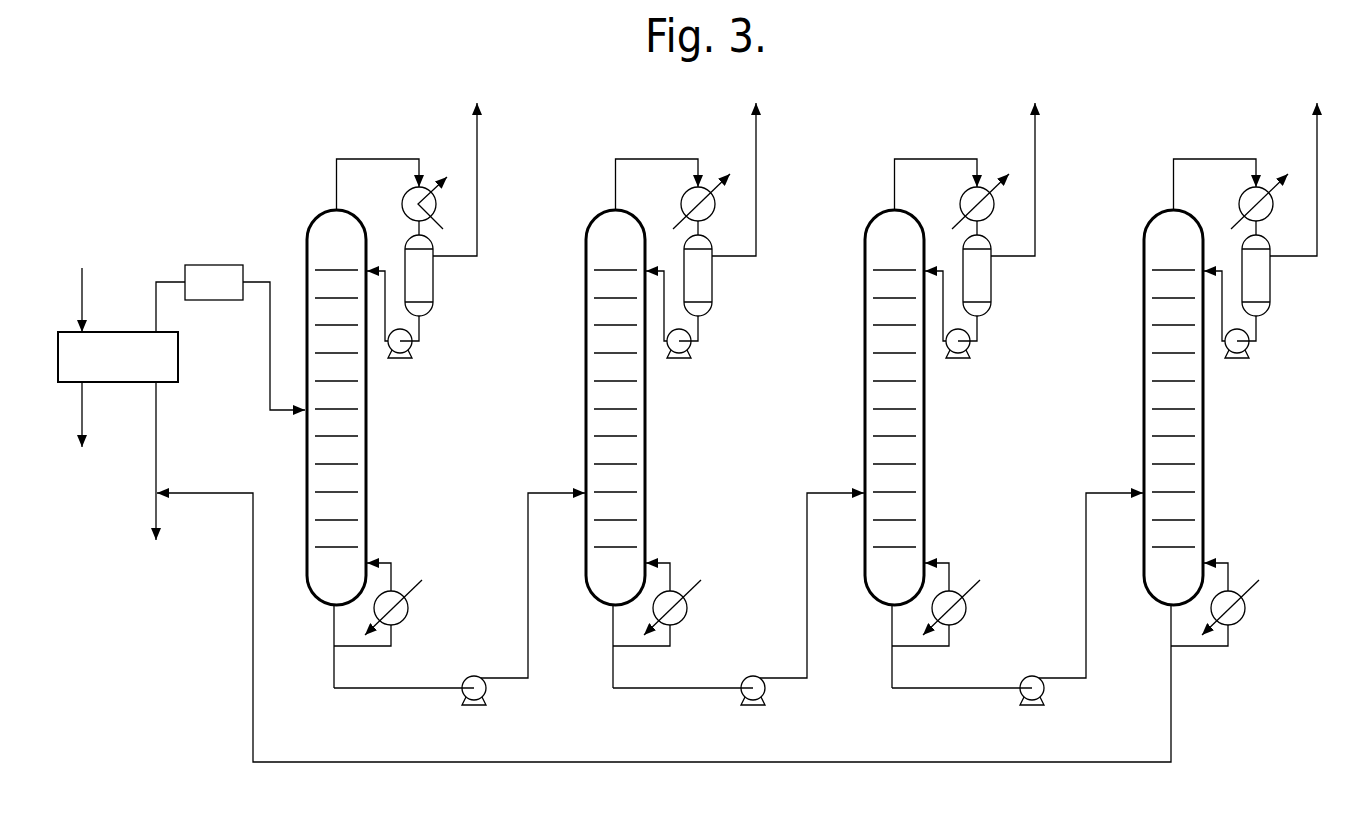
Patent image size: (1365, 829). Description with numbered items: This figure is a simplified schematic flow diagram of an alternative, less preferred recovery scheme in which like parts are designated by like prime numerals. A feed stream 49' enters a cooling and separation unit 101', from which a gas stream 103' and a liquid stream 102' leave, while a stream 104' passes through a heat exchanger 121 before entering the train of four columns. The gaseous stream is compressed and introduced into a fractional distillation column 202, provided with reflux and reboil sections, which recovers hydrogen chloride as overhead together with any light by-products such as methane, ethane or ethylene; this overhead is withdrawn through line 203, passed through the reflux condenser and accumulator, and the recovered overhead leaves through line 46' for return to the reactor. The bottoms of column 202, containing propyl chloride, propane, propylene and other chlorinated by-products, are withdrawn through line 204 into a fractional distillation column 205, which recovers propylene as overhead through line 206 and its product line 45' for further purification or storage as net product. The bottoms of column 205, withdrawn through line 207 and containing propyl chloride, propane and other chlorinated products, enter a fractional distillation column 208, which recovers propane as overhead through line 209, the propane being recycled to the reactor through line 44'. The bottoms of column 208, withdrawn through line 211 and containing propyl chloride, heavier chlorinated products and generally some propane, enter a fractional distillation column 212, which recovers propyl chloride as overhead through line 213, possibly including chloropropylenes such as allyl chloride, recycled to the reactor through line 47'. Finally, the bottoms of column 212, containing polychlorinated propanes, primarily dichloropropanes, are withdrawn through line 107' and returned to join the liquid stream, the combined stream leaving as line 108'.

The feed stream to cooling and separation 49' is at (72, 280).
The cooling and separation unit 101' is at (118, 332).
The liquid stream from cooling and separation 102' is at (130, 437).
The gas stream from cooling and separation 103' is at (77, 432).
The vapor stream to heat exchanger 104' is at (169, 281).
The heat exchanger 121 is at (207, 265).
The line 107' is at (702, 609).
The combined recycle stream 108' is at (189, 521).
The fractional distillation column 202 is at (365, 450).
The line 203 is at (403, 158).
The line 204 is at (372, 690).
The fractional distillation column 205 is at (647, 449).
The line 206 is at (673, 239).
The line 207 is at (738, 611).
The fractional distillation column 208 is at (926, 449).
The line 209 is at (952, 239).
The line 211 is at (1017, 611).
The fractional distillation column 212 is at (1207, 428).
The line 213 is at (1231, 241).
The first column overhead product line 46' is at (482, 179).
The second column overhead product line 45' is at (761, 179).
The line 44' is at (1040, 179).
The line 47' is at (1317, 179).